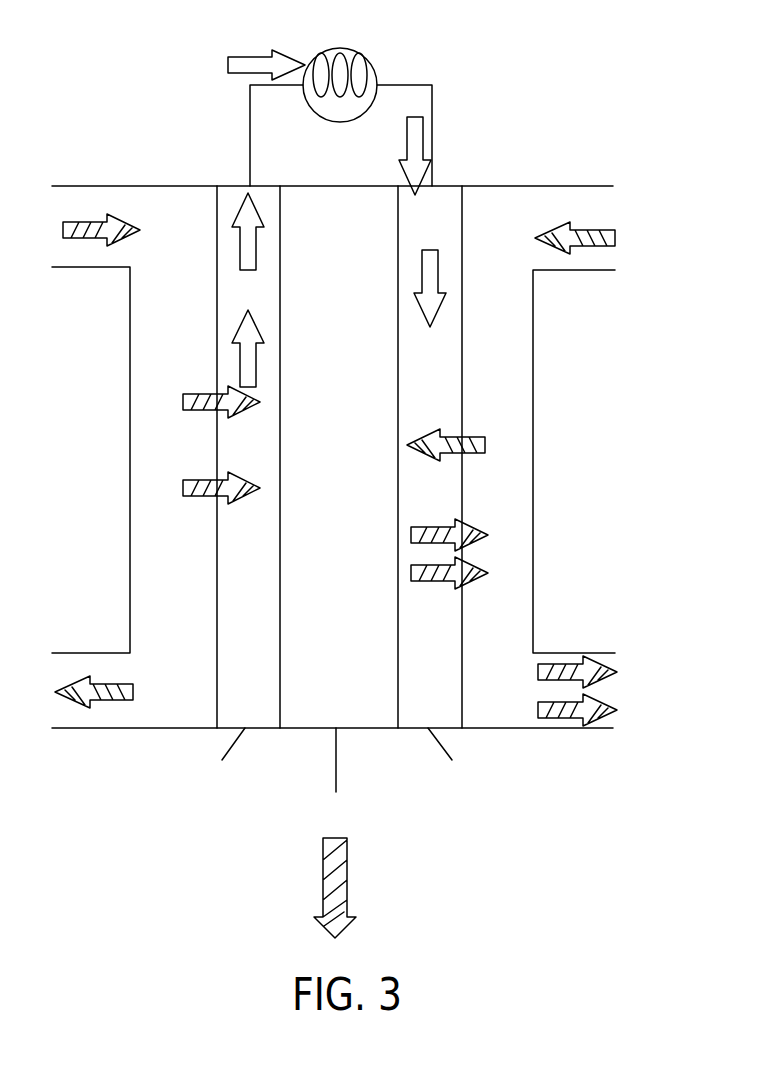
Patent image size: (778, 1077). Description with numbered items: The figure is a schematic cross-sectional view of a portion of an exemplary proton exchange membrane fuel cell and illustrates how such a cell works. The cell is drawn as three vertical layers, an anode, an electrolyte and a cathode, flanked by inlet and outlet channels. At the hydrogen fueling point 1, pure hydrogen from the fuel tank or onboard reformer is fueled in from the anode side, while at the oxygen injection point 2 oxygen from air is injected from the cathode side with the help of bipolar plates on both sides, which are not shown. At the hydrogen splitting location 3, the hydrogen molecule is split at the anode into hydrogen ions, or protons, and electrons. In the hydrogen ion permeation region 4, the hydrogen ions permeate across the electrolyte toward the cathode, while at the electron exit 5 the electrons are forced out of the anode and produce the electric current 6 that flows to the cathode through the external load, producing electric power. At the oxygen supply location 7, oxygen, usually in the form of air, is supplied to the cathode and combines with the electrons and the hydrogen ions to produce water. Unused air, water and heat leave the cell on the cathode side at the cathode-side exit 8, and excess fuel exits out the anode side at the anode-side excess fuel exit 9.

The hydrogen fueling point 1 is at (99, 160).
The oxygen injection point 2 is at (575, 167).
The hydrogen splitting at anode 3 is at (222, 491).
The hydrogen ion permeation across electrolyte 4 is at (336, 621).
The electron exit from anode 5 is at (319, 93).
The electric current through external load 6 is at (433, 122).
The oxygen supply to cathode 7 is at (465, 491).
The cathode-side exit for unused air, water and heat 8 is at (602, 498).
The anode-side excess fuel exit 9 is at (89, 487).